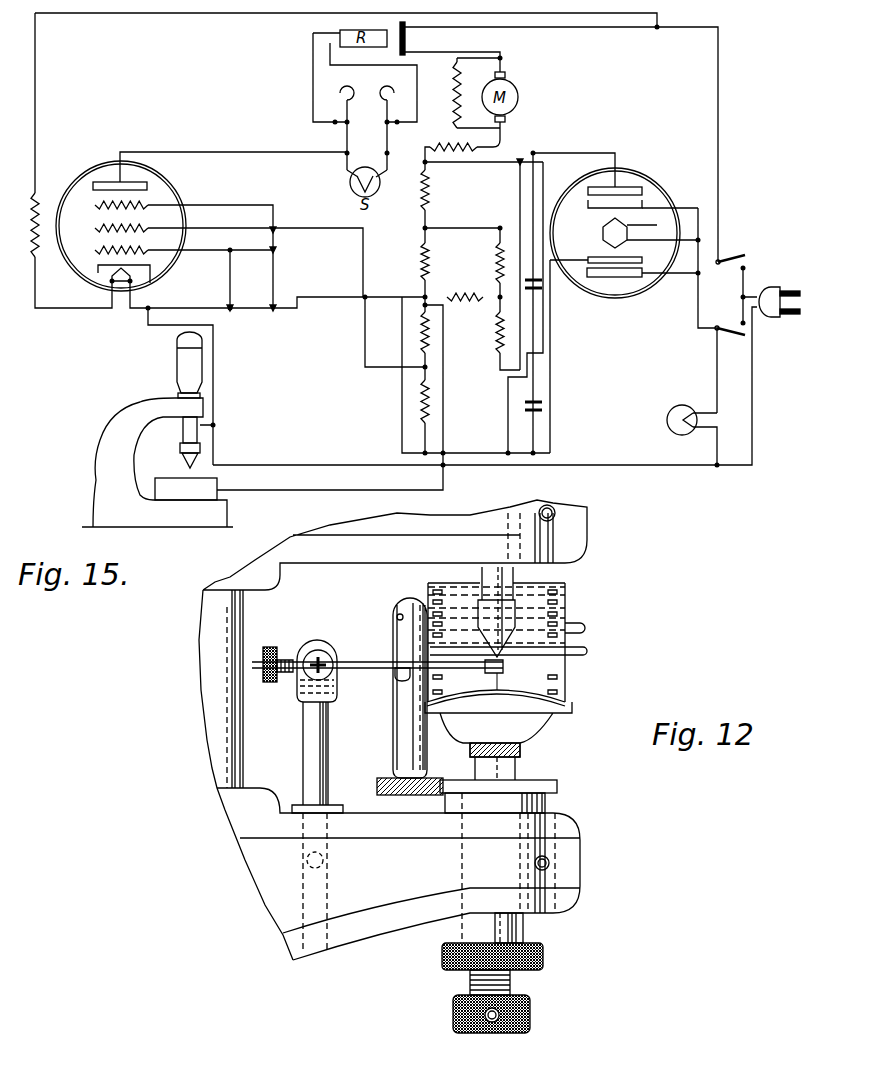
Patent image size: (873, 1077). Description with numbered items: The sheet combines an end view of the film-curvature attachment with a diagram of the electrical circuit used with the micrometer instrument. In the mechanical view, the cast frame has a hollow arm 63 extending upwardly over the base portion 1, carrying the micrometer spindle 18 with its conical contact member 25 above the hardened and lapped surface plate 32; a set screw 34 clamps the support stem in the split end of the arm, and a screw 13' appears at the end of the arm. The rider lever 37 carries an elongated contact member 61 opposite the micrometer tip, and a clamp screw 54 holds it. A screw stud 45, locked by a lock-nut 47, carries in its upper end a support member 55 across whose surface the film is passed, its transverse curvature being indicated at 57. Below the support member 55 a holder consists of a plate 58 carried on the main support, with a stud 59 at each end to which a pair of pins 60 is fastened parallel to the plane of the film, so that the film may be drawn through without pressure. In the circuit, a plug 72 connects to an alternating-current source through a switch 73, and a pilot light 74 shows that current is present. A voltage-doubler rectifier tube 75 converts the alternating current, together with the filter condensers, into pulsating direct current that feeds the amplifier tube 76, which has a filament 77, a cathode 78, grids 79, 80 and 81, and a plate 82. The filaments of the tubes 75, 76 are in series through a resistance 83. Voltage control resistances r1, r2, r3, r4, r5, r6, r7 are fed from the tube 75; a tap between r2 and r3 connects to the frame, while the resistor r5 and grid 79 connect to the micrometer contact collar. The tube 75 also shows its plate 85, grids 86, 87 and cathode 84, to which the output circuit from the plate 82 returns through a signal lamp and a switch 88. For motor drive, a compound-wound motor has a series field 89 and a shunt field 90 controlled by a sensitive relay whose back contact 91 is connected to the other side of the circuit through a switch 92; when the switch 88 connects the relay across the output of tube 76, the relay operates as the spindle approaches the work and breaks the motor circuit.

In FIG. 15, the base portion 1 is at (185, 522).
In FIG. 12, the screw 13' is at (562, 500).
In FIG. 15, the spindle 18 is at (183, 438).
In FIG. 15, the conical contact member 25 is at (193, 463).
In FIG. 15, the surface plate 32 is at (220, 483).
In FIG. 12, the set screw 34 is at (550, 864).
In FIG. 12, the rider lever 37 is at (357, 662).
In FIG. 12, the screw stud 45 is at (512, 986).
In FIG. 12, the lock-nut 47 is at (545, 960).
In FIG. 12, the clamp screw 54 is at (285, 660).
In FIG. 12, the support member 55 is at (420, 722).
In FIG. 12, the curvature 57 is at (513, 700).
In FIG. 12, the plate 58 is at (377, 787).
In FIG. 12, the stud 59 is at (403, 749).
In FIG. 12, the pins 60 is at (590, 652).
In FIG. 12, the contact member 61 is at (500, 684).
In FIG. 15, the hollow arm 63 is at (118, 418).
In FIG. 15, the plug 72 is at (772, 317).
In FIG. 15, the switch 73 is at (738, 338).
In FIG. 15, the pilot light 74 is at (668, 429).
In FIG. 15, the voltage-doubler rectifier tube 75 is at (583, 186).
In FIG. 15, the amplifier tube 76 is at (186, 200).
In FIG. 15, the filament 77 is at (135, 283).
In FIG. 15, the cathode 78 is at (98, 269).
In FIG. 15, the grid 79 is at (95, 251).
In FIG. 15, the grid 80 is at (95, 229).
In FIG. 15, the grid 81 is at (95, 205).
In FIG. 15, the plate 82 is at (150, 186).
In FIG. 15, the resistance 83 is at (42, 240).
In FIG. 15, the cathode 84 is at (595, 258).
In FIG. 15, the plate 85 is at (625, 188).
In FIG. 15, the grid 86 is at (613, 276).
In FIG. 15, the grid 87 is at (592, 203).
In FIG. 15, the switch 88 is at (361, 90).
In FIG. 15, the series field 89 is at (490, 148).
In FIG. 15, the shunt field 90 is at (453, 104).
In FIG. 15, the back contact 91 is at (408, 55).
In FIG. 15, the switch 92 is at (732, 258).
In FIG. 15, the resistance r1 is at (432, 198).
In FIG. 15, the resistance r2 is at (430, 269).
In FIG. 15, the resistance r3 is at (422, 333).
In FIG. 15, the resistance r4 is at (422, 408).
In FIG. 15, the resistor r5 is at (465, 287).
In FIG. 15, the resistance r6 is at (496, 336).
In FIG. 15, the resistance r7 is at (495, 262).